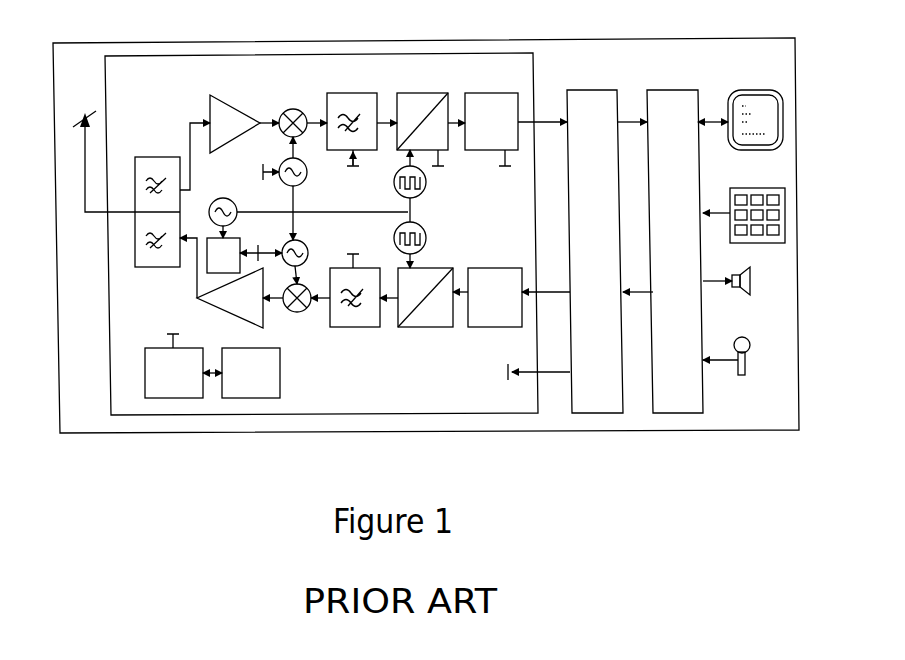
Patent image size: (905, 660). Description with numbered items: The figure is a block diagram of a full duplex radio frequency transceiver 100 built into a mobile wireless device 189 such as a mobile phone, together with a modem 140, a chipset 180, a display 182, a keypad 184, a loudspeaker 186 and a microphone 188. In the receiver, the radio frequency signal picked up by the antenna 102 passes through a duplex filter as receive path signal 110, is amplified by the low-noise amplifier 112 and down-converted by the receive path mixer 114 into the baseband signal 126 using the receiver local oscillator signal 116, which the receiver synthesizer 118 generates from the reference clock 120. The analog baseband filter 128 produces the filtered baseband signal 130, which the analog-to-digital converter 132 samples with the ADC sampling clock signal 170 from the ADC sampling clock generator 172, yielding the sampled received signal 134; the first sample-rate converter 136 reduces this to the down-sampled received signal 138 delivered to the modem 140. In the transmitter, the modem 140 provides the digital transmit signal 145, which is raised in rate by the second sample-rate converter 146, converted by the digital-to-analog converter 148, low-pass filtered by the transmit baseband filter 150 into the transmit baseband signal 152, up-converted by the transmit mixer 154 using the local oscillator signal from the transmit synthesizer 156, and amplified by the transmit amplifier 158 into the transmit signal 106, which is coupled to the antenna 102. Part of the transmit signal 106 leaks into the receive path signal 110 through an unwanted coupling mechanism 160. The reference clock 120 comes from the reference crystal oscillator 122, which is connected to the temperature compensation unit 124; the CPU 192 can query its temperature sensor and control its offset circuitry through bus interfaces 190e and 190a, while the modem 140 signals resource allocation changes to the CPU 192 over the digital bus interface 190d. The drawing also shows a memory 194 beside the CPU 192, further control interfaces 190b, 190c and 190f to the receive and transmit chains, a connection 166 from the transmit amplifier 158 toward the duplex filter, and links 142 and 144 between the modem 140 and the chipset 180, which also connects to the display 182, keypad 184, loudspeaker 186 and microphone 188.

The transceiver 100 is at (534, 85).
The antenna 102 is at (82, 115).
The transmit signal 106 is at (165, 155).
The receive path signal 110 is at (203, 120).
The low-noise amplifier 112 is at (226, 148).
The receive path mixer 114 is at (285, 110).
The receiver local oscillator signal 116 is at (305, 168).
The receiver synthesizer 118 is at (306, 182).
The reference clock 120 is at (301, 246).
The reference crystal oscillator 122 is at (235, 205).
The temperature compensation unit 124 is at (240, 238).
The baseband signal 126 is at (314, 118).
The analog baseband filter 128 is at (330, 165).
The filtered baseband signal 130 is at (381, 110).
The analog-to-digital converter 132 is at (405, 92).
The sampled received signal 134 is at (457, 118).
The first sample-rate converter 136 is at (506, 166).
The down-sampled received signal 138 is at (517, 95).
The modem 140 is at (619, 190).
The modem to chipset connection 142 is at (630, 118).
The chipset to modem connection 144 is at (631, 296).
The digital transmit signal 145 is at (557, 290).
The second sample-rate converter 146 is at (510, 266).
The digital-to-analog converter 148 is at (432, 330).
The transmit baseband filter 150 is at (352, 328).
The transmit baseband signal 152 is at (322, 305).
The transmit mixer 154 is at (297, 314).
The transmit synthesizer 156 is at (308, 286).
The transmit amplifier 158 is at (220, 302).
The unwanted coupling mechanism 160 is at (193, 195).
The amplifier output connection 166 is at (195, 288).
The ADC sampling clock signal 170 is at (398, 172).
The ADC sampling clock generator 172 is at (414, 200).
The chipset 180 is at (677, 88).
The display 182 is at (760, 88).
The keypad 184 is at (773, 188).
The loudspeaker 186 is at (752, 283).
The microphone 188 is at (750, 360).
The mobile wireless device 189 is at (704, 38).
The bus interface 190a is at (260, 253).
The control signal 190b is at (356, 166).
The control signal 190c is at (355, 254).
The digital bus interface 190d is at (506, 371).
The bus interface 190e is at (175, 335).
The control signal 190f is at (441, 166).
The CPU 192 is at (157, 347).
The memory 194 is at (282, 384).